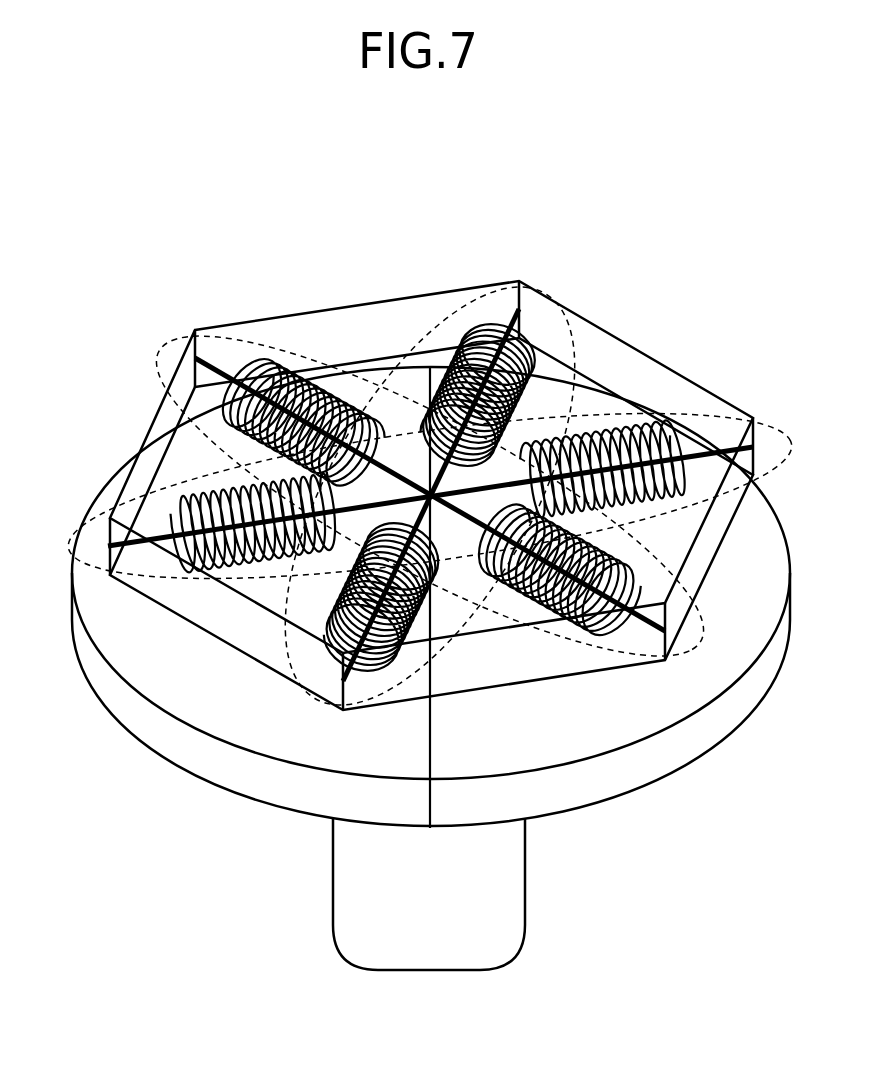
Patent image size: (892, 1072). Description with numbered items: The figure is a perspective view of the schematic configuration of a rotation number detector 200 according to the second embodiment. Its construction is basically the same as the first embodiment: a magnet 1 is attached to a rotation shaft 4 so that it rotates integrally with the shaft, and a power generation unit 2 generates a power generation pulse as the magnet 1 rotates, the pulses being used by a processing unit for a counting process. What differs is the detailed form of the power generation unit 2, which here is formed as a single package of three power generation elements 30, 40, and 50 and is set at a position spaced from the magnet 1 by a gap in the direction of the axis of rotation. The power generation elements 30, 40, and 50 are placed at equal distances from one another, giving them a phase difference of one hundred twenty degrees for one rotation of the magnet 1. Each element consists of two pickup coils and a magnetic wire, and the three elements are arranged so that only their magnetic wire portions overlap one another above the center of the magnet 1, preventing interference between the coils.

The rotation number detector 200 is at (728, 919).
The magnet 1 is at (630, 782).
The power generation unit 2 is at (593, 322).
The rotation shaft 4 is at (513, 897).
The power generation element 30 is at (313, 355).
The power generation element 40 is at (440, 355).
The power generation element 50 is at (712, 413).